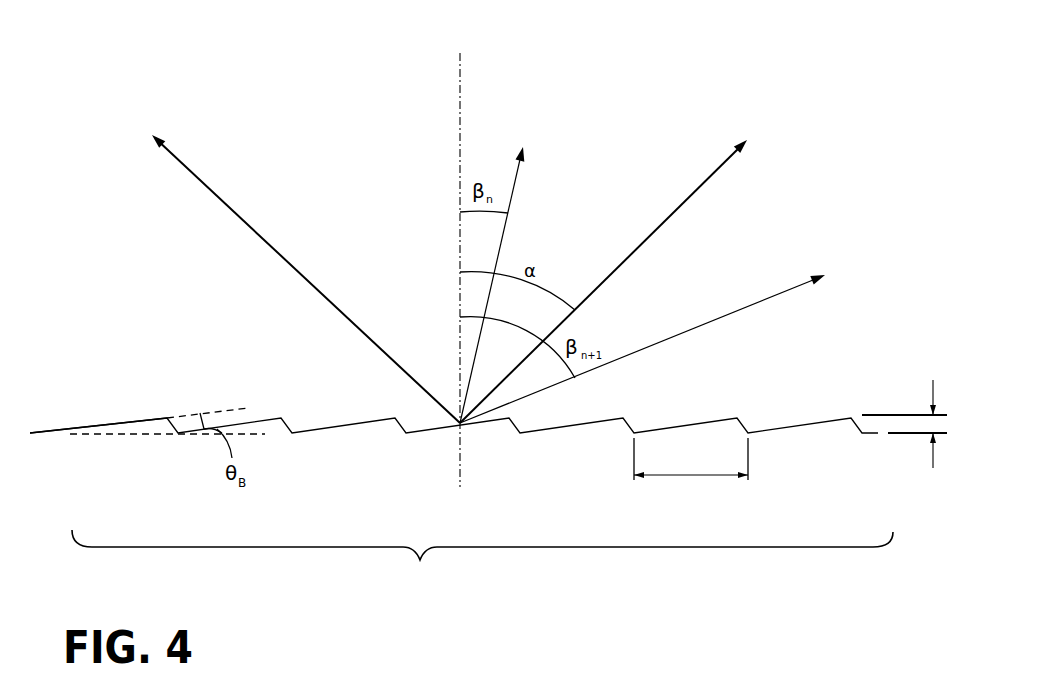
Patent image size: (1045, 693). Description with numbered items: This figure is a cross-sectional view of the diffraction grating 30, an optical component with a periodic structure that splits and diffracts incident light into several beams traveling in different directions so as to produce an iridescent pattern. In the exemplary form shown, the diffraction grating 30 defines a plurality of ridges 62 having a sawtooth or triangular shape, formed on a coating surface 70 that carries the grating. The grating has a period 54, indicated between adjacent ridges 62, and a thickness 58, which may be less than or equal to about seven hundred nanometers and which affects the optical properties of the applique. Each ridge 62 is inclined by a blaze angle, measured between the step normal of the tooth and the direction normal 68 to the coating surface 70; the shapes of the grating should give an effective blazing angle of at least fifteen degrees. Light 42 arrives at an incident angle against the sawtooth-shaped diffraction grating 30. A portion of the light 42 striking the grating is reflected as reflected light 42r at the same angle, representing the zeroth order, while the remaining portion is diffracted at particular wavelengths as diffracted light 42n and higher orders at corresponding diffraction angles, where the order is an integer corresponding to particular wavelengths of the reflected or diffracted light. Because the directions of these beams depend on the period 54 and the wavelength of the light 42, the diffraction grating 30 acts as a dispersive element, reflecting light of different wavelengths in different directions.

The diffraction grating 30 is at (461, 505).
The coating surface 70 is at (42, 432).
The ridges 62 is at (144, 418).
The direction normal 68 is at (458, 80).
The light 42 is at (180, 157).
The diffracted light 42n is at (522, 175).
The reflected light 42r is at (713, 170).
The period 54 is at (695, 475).
The thickness 58 is at (932, 457).